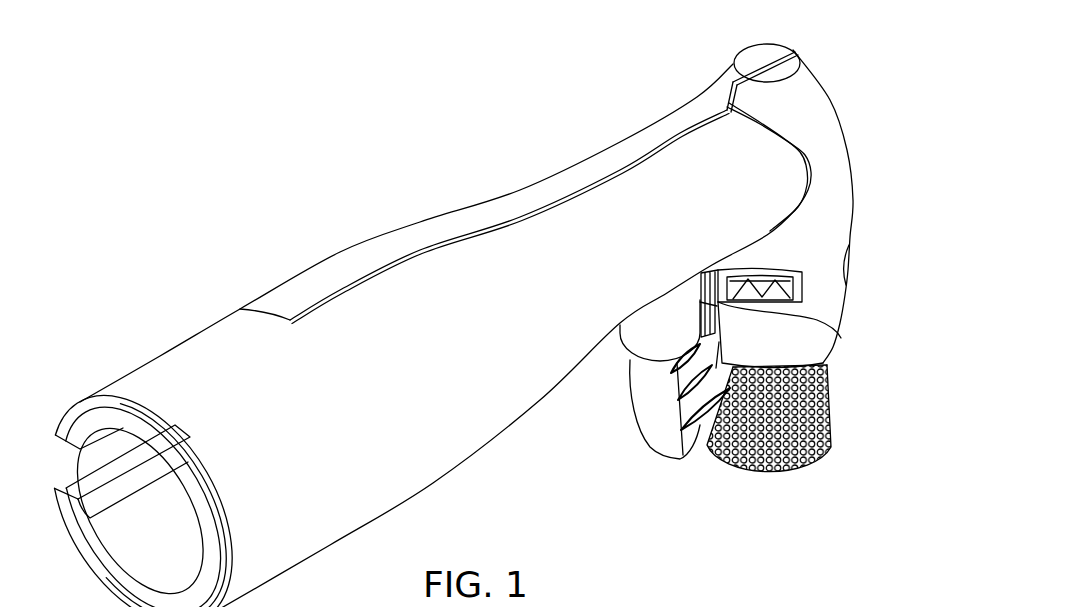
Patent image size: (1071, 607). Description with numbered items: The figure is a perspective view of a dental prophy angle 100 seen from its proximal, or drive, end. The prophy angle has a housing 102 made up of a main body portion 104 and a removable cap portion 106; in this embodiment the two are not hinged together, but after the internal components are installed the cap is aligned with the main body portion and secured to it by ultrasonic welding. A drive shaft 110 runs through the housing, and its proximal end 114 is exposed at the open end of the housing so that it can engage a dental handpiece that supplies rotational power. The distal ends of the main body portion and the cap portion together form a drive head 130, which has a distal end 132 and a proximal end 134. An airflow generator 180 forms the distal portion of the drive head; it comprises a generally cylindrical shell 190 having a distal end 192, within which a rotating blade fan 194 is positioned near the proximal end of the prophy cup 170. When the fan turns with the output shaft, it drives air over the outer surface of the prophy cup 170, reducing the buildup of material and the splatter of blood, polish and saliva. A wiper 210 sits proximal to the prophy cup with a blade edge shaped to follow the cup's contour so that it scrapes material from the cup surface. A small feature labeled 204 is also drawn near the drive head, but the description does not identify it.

The dental prophy angle 100 is at (218, 244).
The housing 102 is at (418, 473).
The main body portion 104 is at (278, 550).
The removable cap portion 106 is at (375, 240).
The drive shaft 110 is at (137, 513).
The proximal end of drive shaft 114 is at (103, 533).
The drive head 130 is at (830, 132).
The distal end of drive head 132 is at (826, 364).
The proximal end of drive head 134 is at (759, 58).
The prophy cup 170 is at (827, 428).
The airflow generator 180 is at (847, 292).
The generally cylindrical shell 190 is at (833, 310).
The distal end of shell 192 is at (823, 345).
The rotating blade fan 194 is at (762, 300).
The pin 204 is at (848, 250).
The wiper 210 is at (638, 404).